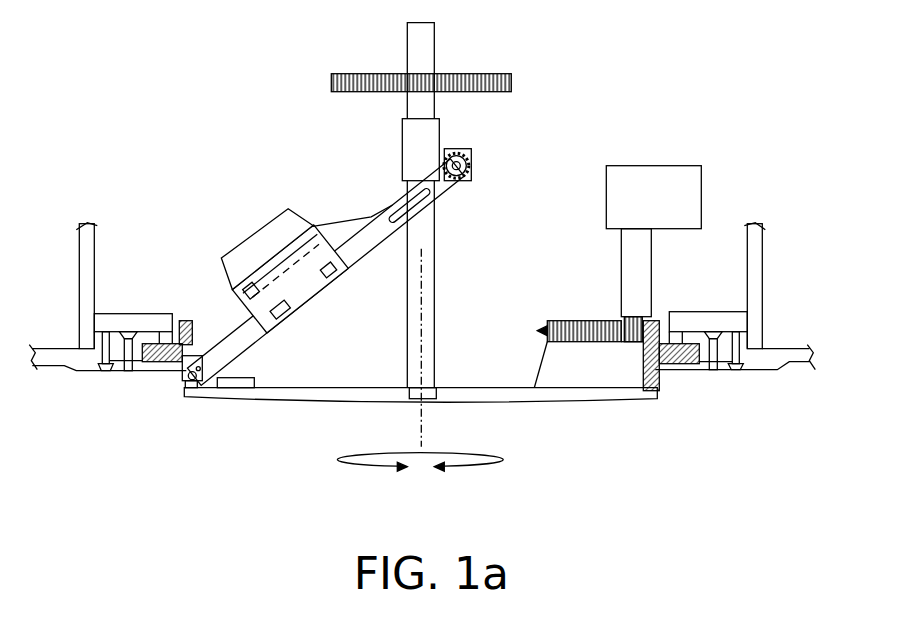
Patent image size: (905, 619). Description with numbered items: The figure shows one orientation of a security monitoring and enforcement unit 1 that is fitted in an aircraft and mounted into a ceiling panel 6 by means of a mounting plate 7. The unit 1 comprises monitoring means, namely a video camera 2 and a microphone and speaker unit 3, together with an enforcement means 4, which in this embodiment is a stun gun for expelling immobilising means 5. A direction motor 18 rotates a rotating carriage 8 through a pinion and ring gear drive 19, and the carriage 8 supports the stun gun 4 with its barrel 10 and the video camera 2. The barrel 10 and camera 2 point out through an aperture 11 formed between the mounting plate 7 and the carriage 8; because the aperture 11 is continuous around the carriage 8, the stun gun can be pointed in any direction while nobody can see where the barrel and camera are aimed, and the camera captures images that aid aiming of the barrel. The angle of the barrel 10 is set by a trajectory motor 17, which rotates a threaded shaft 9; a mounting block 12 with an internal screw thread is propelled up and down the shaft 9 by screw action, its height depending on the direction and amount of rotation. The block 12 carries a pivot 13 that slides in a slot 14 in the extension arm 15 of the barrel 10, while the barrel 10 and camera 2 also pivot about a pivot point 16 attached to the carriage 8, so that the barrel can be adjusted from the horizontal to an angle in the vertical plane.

The security monitoring and enforcement unit 1 is at (163, 140).
The video camera 2 is at (213, 343).
The microphone and speaker unit 3 is at (238, 393).
The enforcement means 4 is at (288, 127).
The immobilising means 5 is at (310, 300).
The ceiling panel 6 is at (50, 350).
The mounting plate 7 is at (80, 371).
The rotating carriage 8 is at (307, 400).
The threaded shaft 9 is at (430, 107).
The barrel 10 is at (238, 348).
The aperture 11 is at (178, 383).
The mounting block 12 is at (402, 148).
The pivot 13 is at (470, 167).
The slot 14 is at (433, 190).
The extension arm 15 is at (393, 203).
The pivot point 16 is at (190, 397).
The trajectory motor 17 is at (492, 73).
The direction motor 18 is at (670, 167).
The pinion and ring gear drive 19 is at (575, 322).